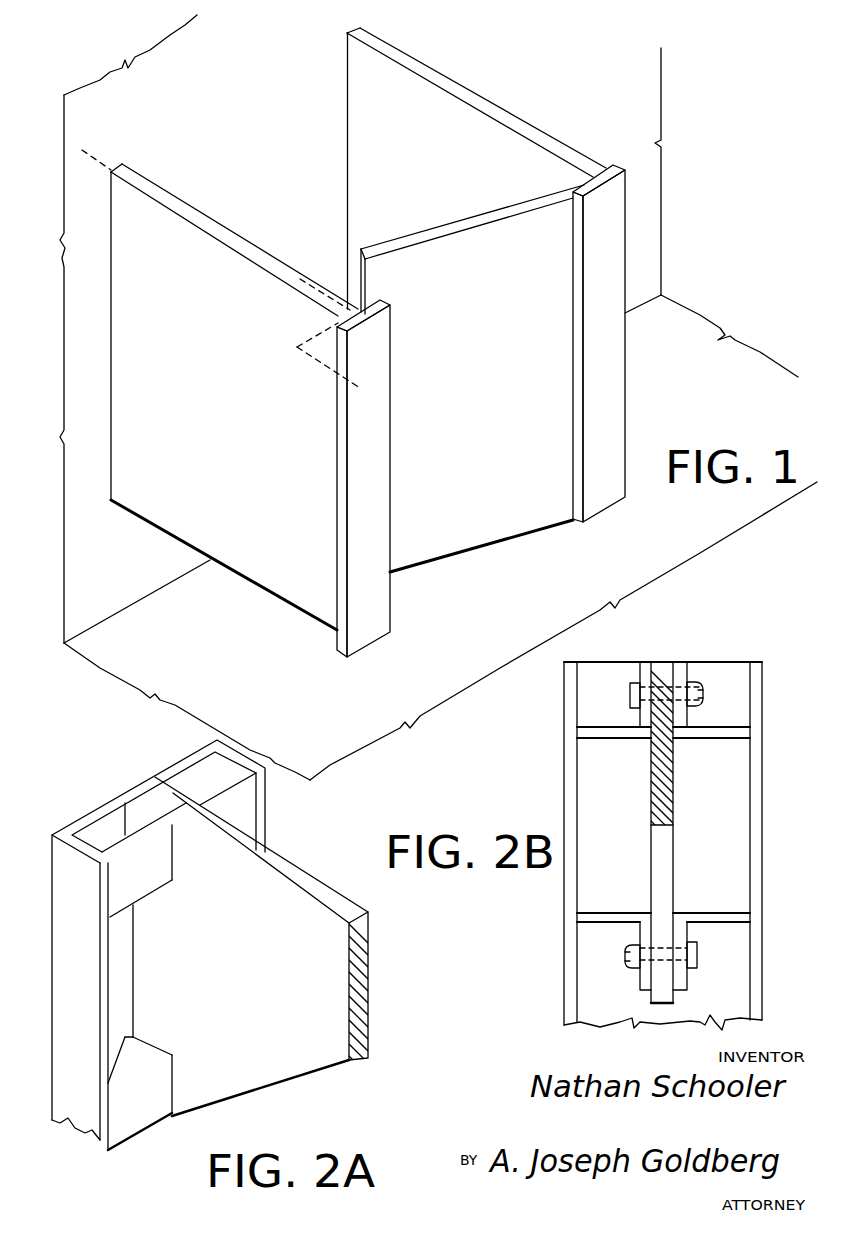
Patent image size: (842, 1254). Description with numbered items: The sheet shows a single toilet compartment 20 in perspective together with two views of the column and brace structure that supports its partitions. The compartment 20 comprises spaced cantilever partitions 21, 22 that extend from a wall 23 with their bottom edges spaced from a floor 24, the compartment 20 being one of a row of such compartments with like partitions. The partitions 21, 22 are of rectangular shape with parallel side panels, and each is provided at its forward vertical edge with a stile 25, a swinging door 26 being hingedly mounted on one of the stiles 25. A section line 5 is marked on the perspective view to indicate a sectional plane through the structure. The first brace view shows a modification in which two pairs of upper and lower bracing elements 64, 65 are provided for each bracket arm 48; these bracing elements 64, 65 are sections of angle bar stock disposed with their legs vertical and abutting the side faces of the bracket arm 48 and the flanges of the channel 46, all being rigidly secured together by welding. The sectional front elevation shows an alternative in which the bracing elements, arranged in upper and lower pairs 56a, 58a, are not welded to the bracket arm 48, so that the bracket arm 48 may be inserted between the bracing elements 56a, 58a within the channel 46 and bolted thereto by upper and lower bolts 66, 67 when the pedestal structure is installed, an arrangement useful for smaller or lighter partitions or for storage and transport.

In FIG. 1, the section line 5- 5 is at (82, 150).
In FIG. 1, the toilet compartment 20 is at (264, 143).
In FIG. 1, the cantilever partition 21 is at (172, 522).
In FIG. 1, the cantilever partition 22 is at (485, 128).
In FIG. 1, the wall 23 is at (85, 335).
In FIG. 1, the floor 24 is at (105, 652).
In FIG. 1, the stile 25 is at (358, 497).
In FIG. 1, the swinging door 26 is at (465, 527).
In FIG. 2A, the channel 46 is at (166, 945).
In FIG. 2B, the channel 46 is at (663, 829).
In FIG. 2A, the bracket arm 48 is at (288, 1066).
In FIG. 2B, the bracket arm 48 is at (650, 862).
In FIG. 2B, the bracing element 56a is at (612, 738).
In FIG. 2B, the bracing element 58a is at (722, 738).
In FIG. 2A, the bracing element 64 is at (137, 884).
In FIG. 2A, the bracing element 65 is at (275, 815).
In FIG. 2B, the bolt 66 is at (628, 698).
In FIG. 2B, the bolt 67 is at (697, 963).